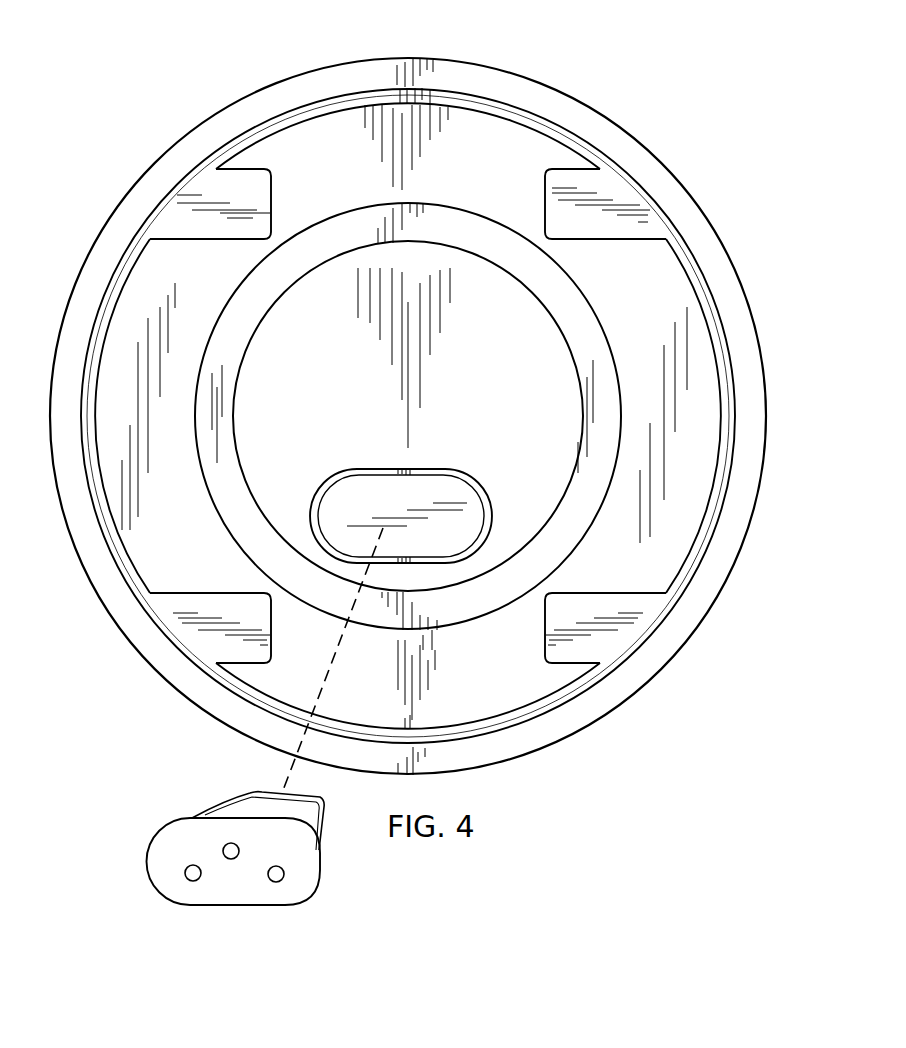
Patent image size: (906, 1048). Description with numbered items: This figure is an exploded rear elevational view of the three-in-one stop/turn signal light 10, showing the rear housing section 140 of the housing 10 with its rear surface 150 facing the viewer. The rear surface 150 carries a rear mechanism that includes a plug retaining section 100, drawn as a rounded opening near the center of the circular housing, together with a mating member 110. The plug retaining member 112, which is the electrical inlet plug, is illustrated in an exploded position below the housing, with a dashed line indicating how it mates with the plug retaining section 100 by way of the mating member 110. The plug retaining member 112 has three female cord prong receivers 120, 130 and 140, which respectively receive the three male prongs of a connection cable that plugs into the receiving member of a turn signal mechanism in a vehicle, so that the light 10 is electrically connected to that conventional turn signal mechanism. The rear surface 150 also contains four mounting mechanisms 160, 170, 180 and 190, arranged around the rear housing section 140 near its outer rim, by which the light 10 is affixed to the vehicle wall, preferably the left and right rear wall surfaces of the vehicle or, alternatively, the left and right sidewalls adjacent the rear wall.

The three-in-one stop/turn signal light 10 is at (614, 86).
The plug retaining section 100 is at (339, 473).
The mating member 110 is at (252, 793).
The plug retaining member 112 is at (334, 872).
The female cord prong receiver 120 is at (232, 860).
The female cord prong receiver 130 is at (191, 878).
The rear housing section 140 is at (279, 877).
The rear surface 150 is at (497, 143).
The mounting mechanism 160 is at (188, 208).
The mounting mechanism 170 is at (606, 191).
The mounting mechanism 180 is at (620, 636).
The mounting mechanism 190 is at (213, 637).